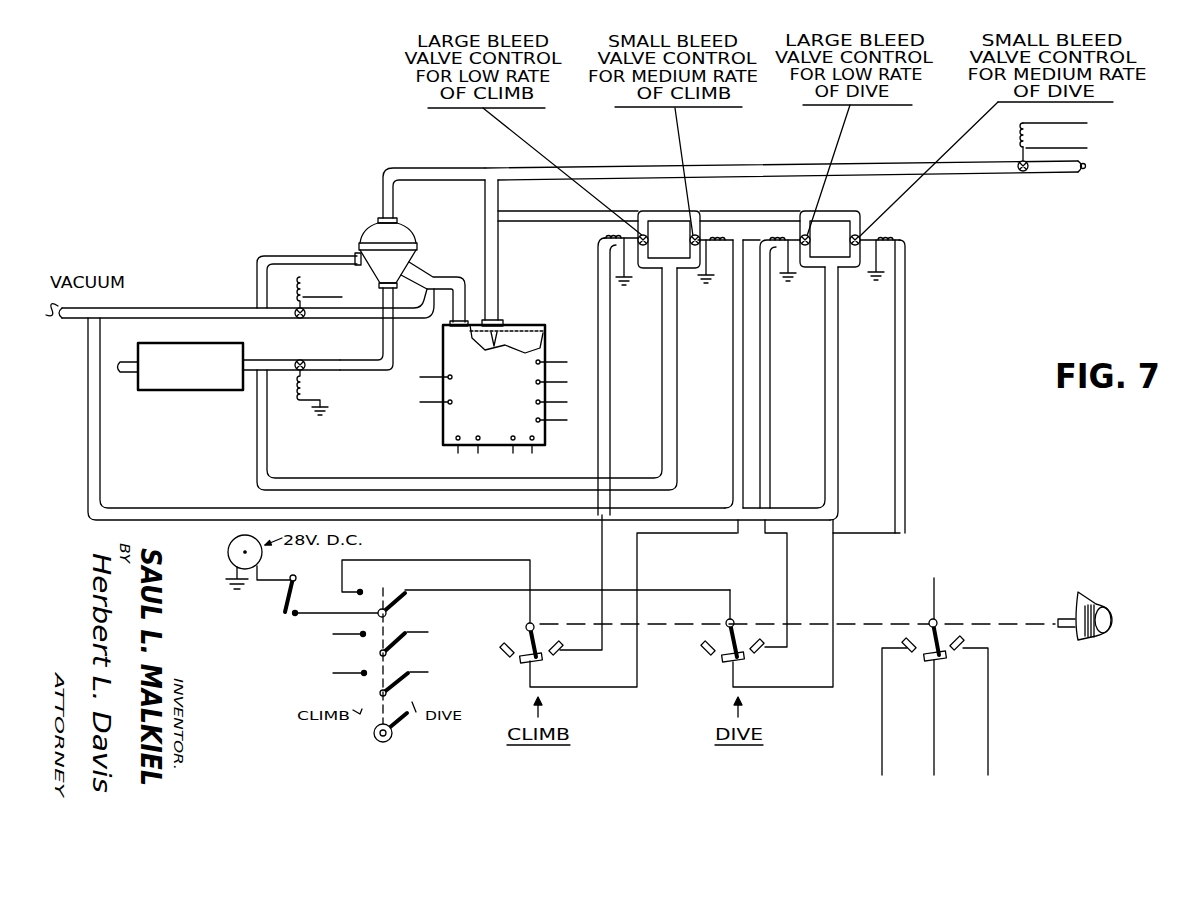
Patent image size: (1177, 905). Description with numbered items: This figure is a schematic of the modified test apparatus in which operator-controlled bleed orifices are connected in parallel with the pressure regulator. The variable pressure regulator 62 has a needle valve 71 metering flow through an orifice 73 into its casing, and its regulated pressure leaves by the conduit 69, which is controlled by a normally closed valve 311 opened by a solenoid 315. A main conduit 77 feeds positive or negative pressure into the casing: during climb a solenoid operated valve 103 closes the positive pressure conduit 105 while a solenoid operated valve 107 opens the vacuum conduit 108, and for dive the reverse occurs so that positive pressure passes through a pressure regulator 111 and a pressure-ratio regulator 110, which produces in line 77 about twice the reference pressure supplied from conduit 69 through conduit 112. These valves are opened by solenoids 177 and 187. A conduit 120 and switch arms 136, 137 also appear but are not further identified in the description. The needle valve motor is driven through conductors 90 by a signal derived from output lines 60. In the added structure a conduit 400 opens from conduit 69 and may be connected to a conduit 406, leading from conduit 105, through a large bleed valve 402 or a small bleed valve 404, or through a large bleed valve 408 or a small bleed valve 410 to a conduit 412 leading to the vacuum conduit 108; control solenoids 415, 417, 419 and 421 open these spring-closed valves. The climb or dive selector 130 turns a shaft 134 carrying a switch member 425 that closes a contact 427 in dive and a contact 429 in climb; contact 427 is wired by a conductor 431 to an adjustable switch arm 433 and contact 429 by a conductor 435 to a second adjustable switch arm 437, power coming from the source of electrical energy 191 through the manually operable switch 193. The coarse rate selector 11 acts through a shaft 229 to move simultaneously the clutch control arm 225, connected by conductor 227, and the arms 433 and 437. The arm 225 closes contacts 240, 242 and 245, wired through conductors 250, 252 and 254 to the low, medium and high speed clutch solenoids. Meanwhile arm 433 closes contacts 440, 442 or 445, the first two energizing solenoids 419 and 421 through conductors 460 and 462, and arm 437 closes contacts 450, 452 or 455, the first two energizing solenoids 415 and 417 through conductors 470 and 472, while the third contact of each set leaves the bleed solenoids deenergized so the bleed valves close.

The coarse rate selector 11 is at (1107, 637).
The output lines 60 is at (545, 362).
The variable pressure regulator 62 is at (539, 320).
The conduit 69 is at (485, 210).
The needle valve 71 is at (500, 340).
The orifice 73 is at (496, 318).
The main conduit 77 is at (420, 272).
The conductors 90 is at (556, 421).
The solenoid operated valve 103 is at (298, 361).
The conduit 105 is at (368, 360).
The solenoid operated valve 107 is at (304, 319).
The conduit 108 is at (183, 307).
The pressure-ratio regulator 110 is at (370, 233).
The pressure regulator 111 is at (164, 393).
The conduit 112 is at (416, 168).
The bypass pipe 120 is at (260, 256).
The climb or dive selector 130 is at (393, 728).
The selector shaft 134 is at (380, 635).
The switch arm 136 is at (400, 683).
The switch arm 137 is at (400, 643).
The solenoid 177 is at (297, 396).
The second solenoid 187 is at (308, 283).
The source of electrical energy 191 is at (228, 553).
The manually operable switch 193 is at (283, 595).
The clutch control arm 225 is at (942, 633).
The electrical conductor 227 is at (940, 592).
The shaft 229 is at (860, 618).
The switch contact 240 is at (963, 645).
The switch contact 242 is at (951, 668).
The switch contact 245 is at (903, 662).
The conductor 250 is at (990, 718).
The conductor 252 is at (935, 718).
The conductor 254 is at (883, 718).
The valve 311 is at (1025, 173).
The solenoid 315 is at (1030, 138).
The conduit 400 is at (763, 212).
The bleed valve 402 is at (645, 235).
The bleed valve 404 is at (699, 236).
The conduit 406 is at (678, 410).
The bleed valve 408 is at (817, 236).
The bleed valve 410 is at (861, 236).
The conduit 412 is at (839, 410).
The control solenoid 415 is at (599, 252).
The control solenoid 417 is at (719, 261).
The control solenoid 419 is at (774, 250).
The control solenoid 421 is at (906, 254).
The switch member 425 is at (393, 612).
The contact 427 is at (413, 587).
The second contact 429 is at (373, 582).
The electrical conductor 431 is at (555, 588).
The adjustable switch arm 433 is at (737, 623).
The electrical conductor 435 is at (420, 560).
The second adjustable switch arm 437 is at (525, 634).
The switch contact 440 is at (753, 652).
The switch contact 442 is at (728, 661).
The switch contact 445 is at (703, 652).
The switch contact 450 is at (557, 654).
The switch contact 452 is at (528, 664).
The switch contact 455 is at (497, 662).
The electrical conductor 460 is at (787, 560).
The electrical conductor 462 is at (906, 410).
The conductor 470 is at (605, 410).
The conductor 472 is at (637, 560).